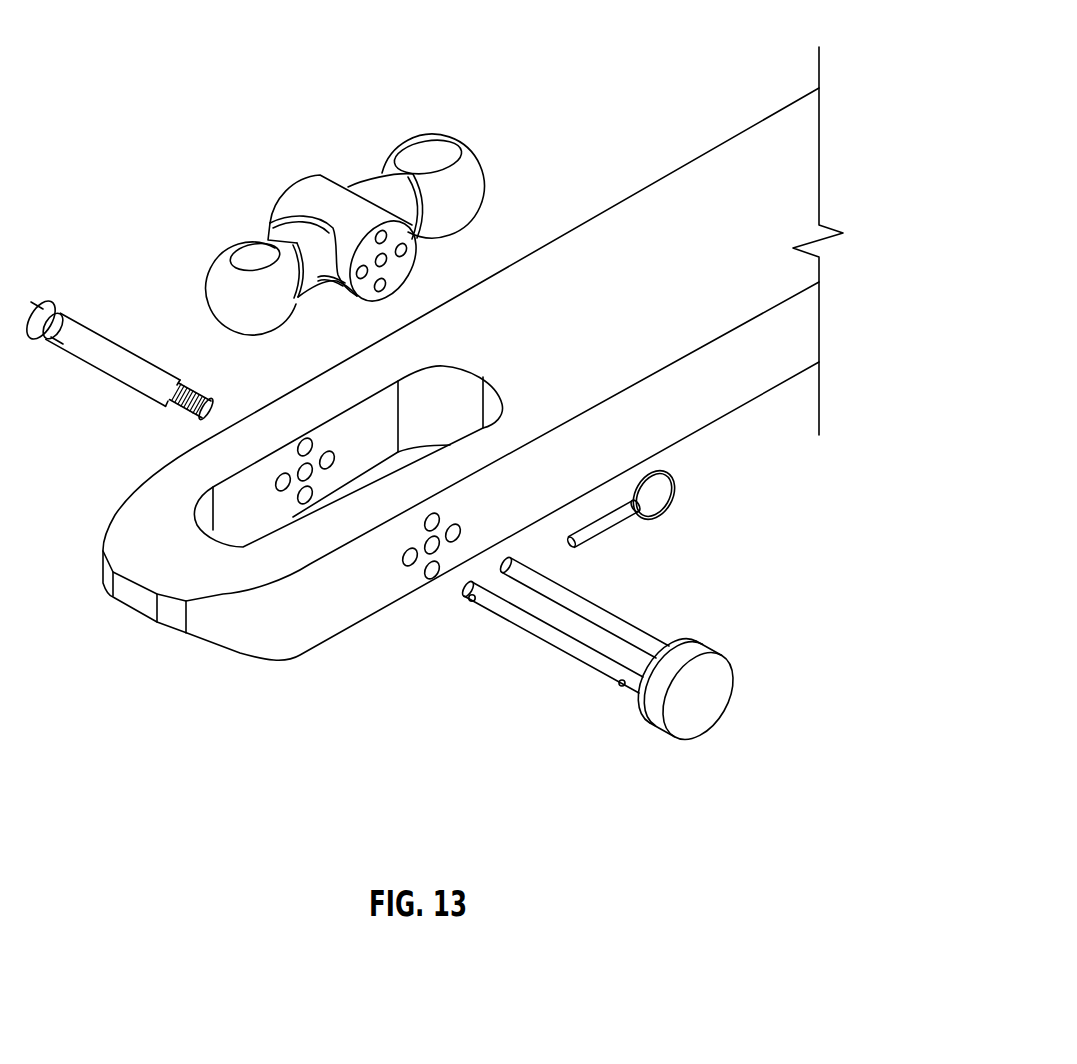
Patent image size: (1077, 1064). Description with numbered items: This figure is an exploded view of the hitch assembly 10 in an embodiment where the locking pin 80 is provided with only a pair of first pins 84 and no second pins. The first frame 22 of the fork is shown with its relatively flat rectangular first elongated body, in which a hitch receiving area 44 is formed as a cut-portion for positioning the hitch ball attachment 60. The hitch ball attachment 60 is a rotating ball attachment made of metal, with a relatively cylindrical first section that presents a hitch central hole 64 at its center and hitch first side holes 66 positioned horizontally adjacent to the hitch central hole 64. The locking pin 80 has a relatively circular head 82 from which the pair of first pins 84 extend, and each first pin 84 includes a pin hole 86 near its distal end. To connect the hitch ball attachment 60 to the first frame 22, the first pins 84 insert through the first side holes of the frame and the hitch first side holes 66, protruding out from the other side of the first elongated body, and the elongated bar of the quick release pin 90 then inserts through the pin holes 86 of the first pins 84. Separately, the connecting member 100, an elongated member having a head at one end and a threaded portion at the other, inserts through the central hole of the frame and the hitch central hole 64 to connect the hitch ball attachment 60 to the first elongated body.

The hitch assembly 10 is at (177, 42).
The first frame 22 is at (707, 172).
The hitch receiving area 44 is at (242, 507).
The hitch ball attachment 60 is at (318, 187).
The hitch central hole 64 is at (435, 585).
The hitch first side holes 66 is at (410, 560).
The locking pin 80 is at (741, 651).
The head 82 is at (700, 711).
The first pins 84 is at (593, 663).
The pin hole 86 is at (475, 603).
The quick release pin 90 is at (618, 518).
The connecting member 100 is at (100, 353).